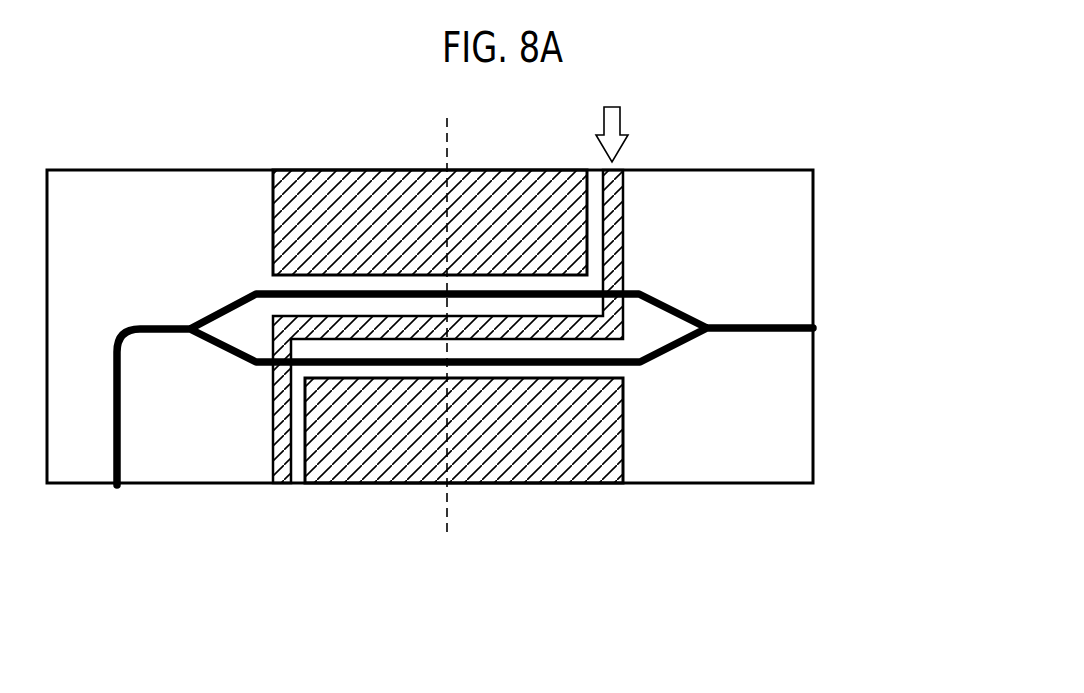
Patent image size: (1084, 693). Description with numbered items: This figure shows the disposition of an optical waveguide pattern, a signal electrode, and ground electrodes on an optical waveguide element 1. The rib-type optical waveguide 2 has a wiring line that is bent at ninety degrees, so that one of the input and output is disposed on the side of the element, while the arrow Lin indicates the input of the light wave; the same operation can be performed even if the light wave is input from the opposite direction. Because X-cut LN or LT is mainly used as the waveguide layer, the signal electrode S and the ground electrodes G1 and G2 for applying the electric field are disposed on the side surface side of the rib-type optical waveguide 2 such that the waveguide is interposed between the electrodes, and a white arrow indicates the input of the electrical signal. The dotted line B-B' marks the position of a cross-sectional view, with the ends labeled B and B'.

The optical waveguide element 1 is at (773, 213).
The rib-type optical waveguide 2 is at (225, 290).
The ground electrode G1 is at (325, 197).
The ground electrode G2 is at (593, 463).
The signal electrode S is at (613, 205).
The section line B-B' B is at (495, 318).
The section line B- B' is at (499, 537).
The arrow Lin is at (829, 328).